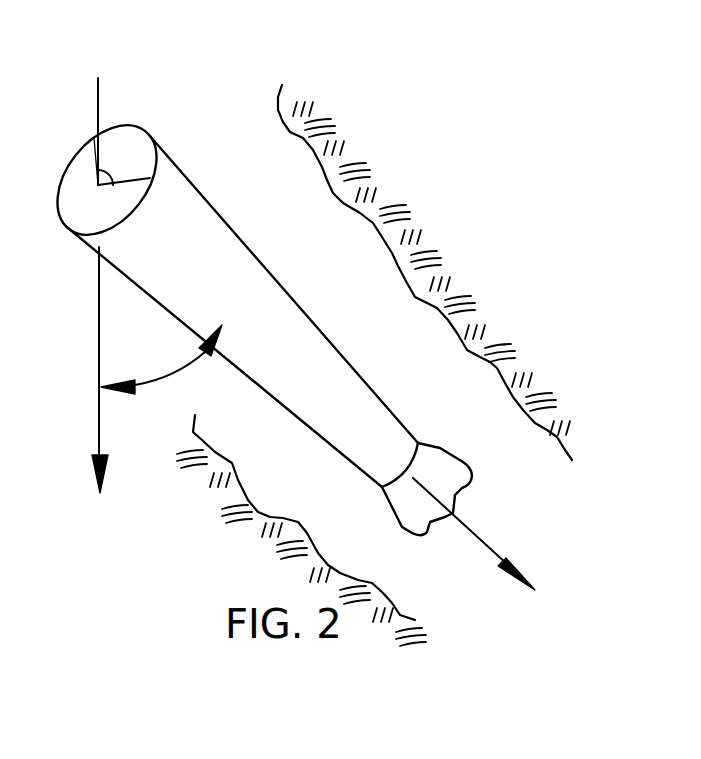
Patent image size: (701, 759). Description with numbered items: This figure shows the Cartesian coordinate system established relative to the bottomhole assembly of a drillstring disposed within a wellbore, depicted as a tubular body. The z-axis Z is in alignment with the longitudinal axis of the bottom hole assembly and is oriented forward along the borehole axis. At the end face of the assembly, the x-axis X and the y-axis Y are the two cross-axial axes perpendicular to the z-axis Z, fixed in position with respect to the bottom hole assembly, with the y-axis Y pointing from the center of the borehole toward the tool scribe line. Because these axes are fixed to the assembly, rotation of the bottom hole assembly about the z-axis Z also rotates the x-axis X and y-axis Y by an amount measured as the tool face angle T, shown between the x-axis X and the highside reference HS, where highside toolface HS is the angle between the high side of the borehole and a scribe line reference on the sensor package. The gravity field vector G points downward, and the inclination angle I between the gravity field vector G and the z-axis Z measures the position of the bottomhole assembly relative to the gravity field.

The highside toolface HS is at (103, 95).
The x-axis X is at (81, 140).
The y-axis Y is at (150, 178).
The tool face angle T is at (117, 160).
The inclination angle I is at (161, 364).
The gravity field vector G is at (103, 405).
The z-axis Z is at (496, 553).